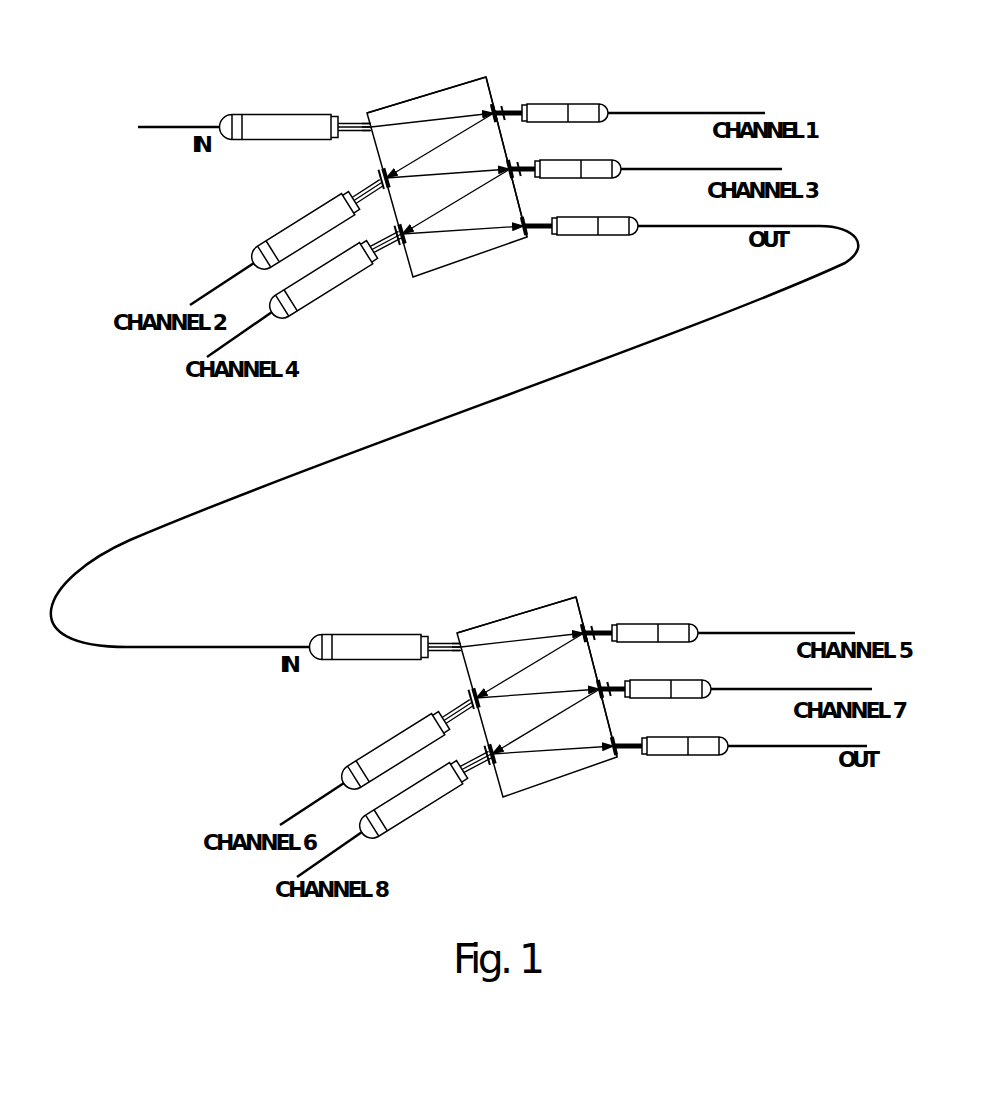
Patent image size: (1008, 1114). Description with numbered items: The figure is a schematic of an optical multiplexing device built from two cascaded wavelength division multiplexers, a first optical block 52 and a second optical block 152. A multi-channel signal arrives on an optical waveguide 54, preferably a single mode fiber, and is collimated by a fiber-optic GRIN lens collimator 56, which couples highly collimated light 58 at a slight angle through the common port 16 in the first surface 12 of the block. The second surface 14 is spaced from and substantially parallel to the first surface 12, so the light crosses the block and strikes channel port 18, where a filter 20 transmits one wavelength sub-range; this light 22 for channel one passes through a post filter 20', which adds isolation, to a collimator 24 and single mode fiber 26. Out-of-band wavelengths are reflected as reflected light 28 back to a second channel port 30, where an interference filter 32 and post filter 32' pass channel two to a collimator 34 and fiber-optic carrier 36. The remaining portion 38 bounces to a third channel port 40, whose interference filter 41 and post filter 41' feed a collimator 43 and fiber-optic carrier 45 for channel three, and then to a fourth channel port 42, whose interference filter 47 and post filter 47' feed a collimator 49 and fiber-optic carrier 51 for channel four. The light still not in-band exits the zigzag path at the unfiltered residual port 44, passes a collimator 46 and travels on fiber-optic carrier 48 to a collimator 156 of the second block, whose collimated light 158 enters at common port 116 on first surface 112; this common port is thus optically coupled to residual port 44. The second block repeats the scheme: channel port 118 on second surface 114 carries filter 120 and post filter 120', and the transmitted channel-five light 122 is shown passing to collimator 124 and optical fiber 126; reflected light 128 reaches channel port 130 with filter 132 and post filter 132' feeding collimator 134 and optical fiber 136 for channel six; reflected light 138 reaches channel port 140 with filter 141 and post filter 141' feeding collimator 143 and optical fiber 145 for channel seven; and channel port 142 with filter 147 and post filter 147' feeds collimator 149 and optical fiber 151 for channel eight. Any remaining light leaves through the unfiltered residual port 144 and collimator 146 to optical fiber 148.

The first surface 12 is at (410, 272).
The second surface 14 is at (488, 82).
The common port 16 is at (368, 132).
The channel port 18 is at (482, 117).
The filter 20 is at (510, 86).
The post filter 20' is at (534, 87).
The light corresponding to channel 1 22 is at (507, 120).
The collimator 24 is at (587, 109).
The single mode fiber 26 is at (647, 116).
The reflected light 28 is at (437, 161).
The second channel port 30 is at (387, 175).
The interference filter 32 is at (340, 176).
The post filter 32' is at (332, 197).
The collimator 34 is at (270, 238).
The fiber-optic carrier 36 is at (223, 285).
The remaining portion of the collimated light 38 is at (400, 177).
The third channel port 40 is at (508, 166).
The interference filter 41 is at (541, 190).
The post filter 41' is at (559, 154).
The fourth channel port 42 is at (407, 231).
The collimator 43 is at (607, 160).
The residual port 44 is at (517, 222).
The fiber-optic carrier 45 is at (645, 167).
The collimator 46 is at (612, 216).
The interference filter 47 is at (367, 235).
The post filter 47' is at (377, 271).
The fiber-optic carrier 48 is at (660, 221).
The collimator 49 is at (308, 303).
The fiber-optic carrier 51 is at (263, 323).
The first optical block 52 is at (427, 93).
The optical waveguide 54 is at (173, 132).
The fiber-optic GRIN lens collimator 56 is at (263, 118).
The collimated light 58 is at (347, 122).
The first surface 112 is at (537, 719).
The second surface 114 is at (591, 650).
The common port 116 is at (420, 665).
The channel port 118 is at (522, 631).
The filter 120 is at (601, 606).
The post filter 120' is at (625, 607).
The channel 5 output pigtail 122 is at (617, 651).
The collimator 124 is at (668, 607).
The optical fiber 126 is at (776, 604).
The reflected light 128 is at (530, 665).
The channel port 130 is at (489, 677).
The filter 132 is at (428, 696).
The post filter 132' is at (419, 717).
The collimator 134 is at (375, 752).
The optical fiber 136 is at (294, 803).
The reflected light 138 is at (538, 685).
The channel port 140 is at (581, 674).
The filter 141 is at (632, 710).
The post filter 141' is at (651, 674).
The channel port 142 is at (544, 726).
The collimator 143 is at (677, 670).
The residual port 144 is at (584, 748).
The optical fiber 145 is at (791, 667).
The collimator 146 is at (688, 726).
The filter 147 is at (456, 755).
The post filter 147' is at (465, 791).
The optical fiber 148 is at (797, 724).
The collimator 149 is at (412, 807).
The optical fiber 151 is at (329, 843).
The second optical block 152 is at (516, 596).
The collimator 156 is at (369, 624).
The collimated light 158 is at (434, 610).